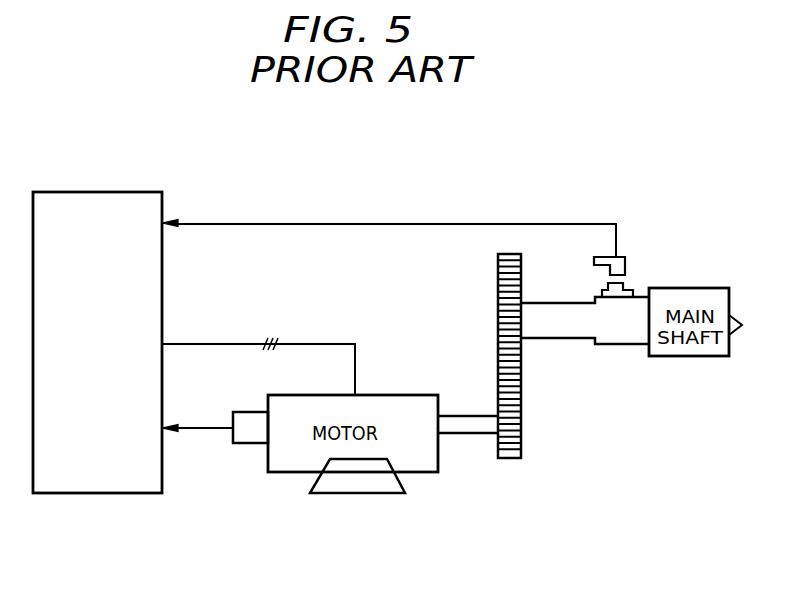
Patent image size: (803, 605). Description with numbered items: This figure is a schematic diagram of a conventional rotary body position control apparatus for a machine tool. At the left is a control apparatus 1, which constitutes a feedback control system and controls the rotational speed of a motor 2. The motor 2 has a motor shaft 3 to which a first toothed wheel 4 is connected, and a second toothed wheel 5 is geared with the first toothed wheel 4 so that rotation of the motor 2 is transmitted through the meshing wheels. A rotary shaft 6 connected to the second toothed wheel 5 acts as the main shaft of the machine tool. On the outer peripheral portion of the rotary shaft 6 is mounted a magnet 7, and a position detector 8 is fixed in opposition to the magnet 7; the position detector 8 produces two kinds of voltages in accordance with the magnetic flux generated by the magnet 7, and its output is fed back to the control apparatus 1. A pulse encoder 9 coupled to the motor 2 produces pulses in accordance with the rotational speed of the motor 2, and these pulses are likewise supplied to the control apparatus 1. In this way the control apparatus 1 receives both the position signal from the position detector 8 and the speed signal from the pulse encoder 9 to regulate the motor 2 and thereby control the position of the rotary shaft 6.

The control apparatus 1 is at (82, 192).
The motor 2 is at (353, 493).
The motor shaft 3 is at (471, 434).
The toothed wheel 4 is at (510, 459).
The toothed wheel 5 is at (498, 283).
The rotary shaft 6 is at (622, 345).
The magnet 7 is at (630, 288).
The position detector 8 is at (622, 257).
The pulse encoder 9 is at (244, 443).